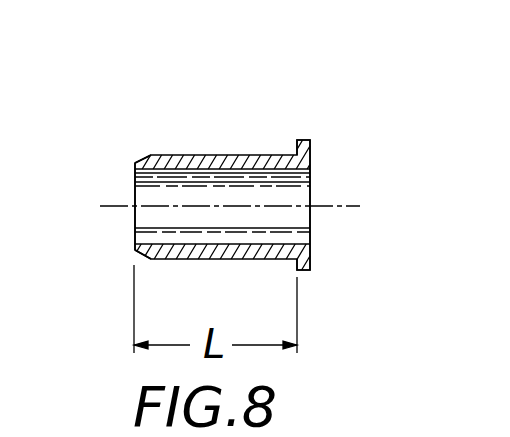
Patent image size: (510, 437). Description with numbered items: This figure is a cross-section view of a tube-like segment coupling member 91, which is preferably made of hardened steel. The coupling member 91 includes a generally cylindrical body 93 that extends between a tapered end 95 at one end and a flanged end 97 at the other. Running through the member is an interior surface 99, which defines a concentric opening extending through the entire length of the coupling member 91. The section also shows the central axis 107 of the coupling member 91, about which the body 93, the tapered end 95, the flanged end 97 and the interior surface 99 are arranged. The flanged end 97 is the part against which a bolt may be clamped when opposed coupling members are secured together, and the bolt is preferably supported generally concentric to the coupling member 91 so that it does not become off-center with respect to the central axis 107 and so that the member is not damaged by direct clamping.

The coupling member 91 is at (214, 147).
The generally cylindrical body 93 is at (222, 152).
The tapered end 95 is at (148, 162).
The flanged end 97 is at (310, 150).
The interior surface 99 is at (150, 190).
The central axis 107 is at (327, 207).